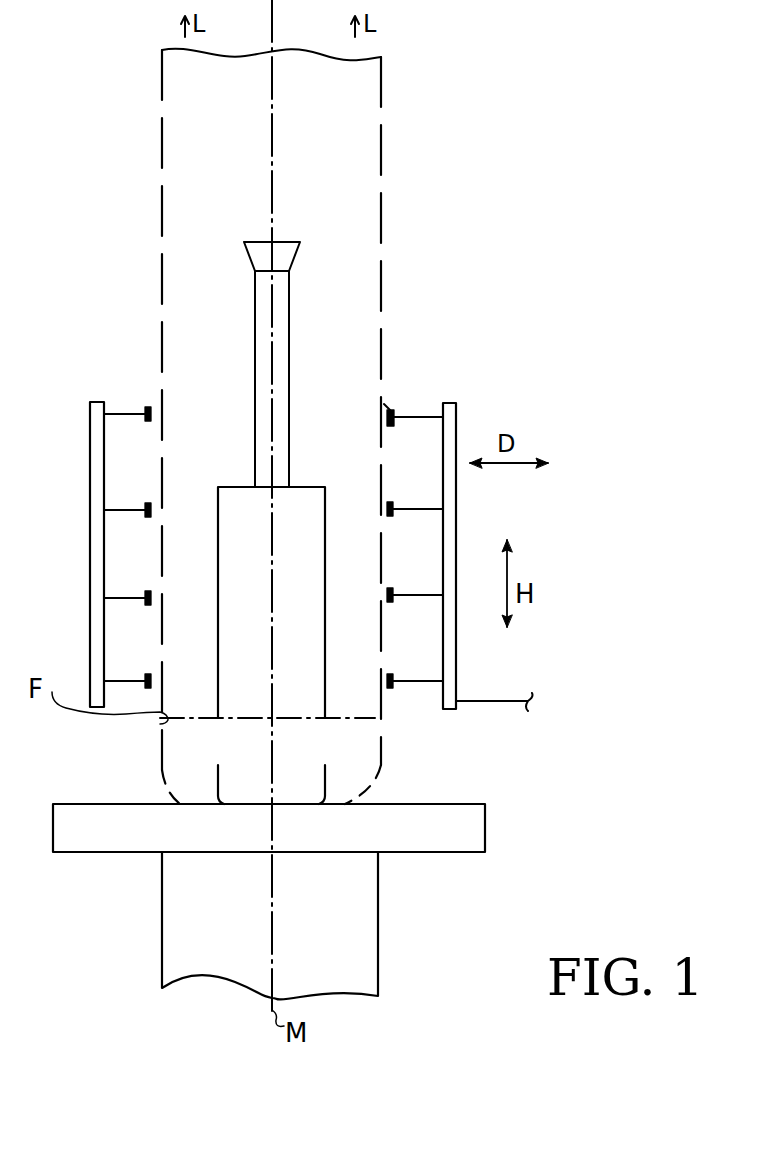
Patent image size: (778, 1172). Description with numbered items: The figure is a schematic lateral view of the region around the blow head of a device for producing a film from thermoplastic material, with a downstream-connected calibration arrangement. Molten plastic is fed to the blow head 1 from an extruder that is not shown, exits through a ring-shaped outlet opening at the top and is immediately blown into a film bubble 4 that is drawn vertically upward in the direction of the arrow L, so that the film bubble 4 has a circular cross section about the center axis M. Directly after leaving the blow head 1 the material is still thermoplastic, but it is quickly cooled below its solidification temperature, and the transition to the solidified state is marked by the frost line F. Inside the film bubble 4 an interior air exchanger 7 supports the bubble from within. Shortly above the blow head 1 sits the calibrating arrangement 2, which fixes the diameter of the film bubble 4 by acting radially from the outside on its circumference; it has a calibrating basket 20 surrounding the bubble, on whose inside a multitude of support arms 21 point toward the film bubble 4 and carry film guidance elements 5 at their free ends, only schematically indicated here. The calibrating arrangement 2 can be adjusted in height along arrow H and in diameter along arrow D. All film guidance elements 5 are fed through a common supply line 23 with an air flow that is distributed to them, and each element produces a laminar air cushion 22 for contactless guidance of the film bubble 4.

The blow head 1 is at (378, 890).
The calibrating arrangement 2 is at (460, 406).
The film bubble 4 is at (385, 254).
The film guidance elements 5 is at (390, 412).
The interior air exchanger 7 is at (303, 487).
The calibrating basket 20 is at (457, 505).
The support arms 21 is at (410, 414).
The laminar air cushion 22 is at (385, 406).
The common supply line 23 is at (494, 700).